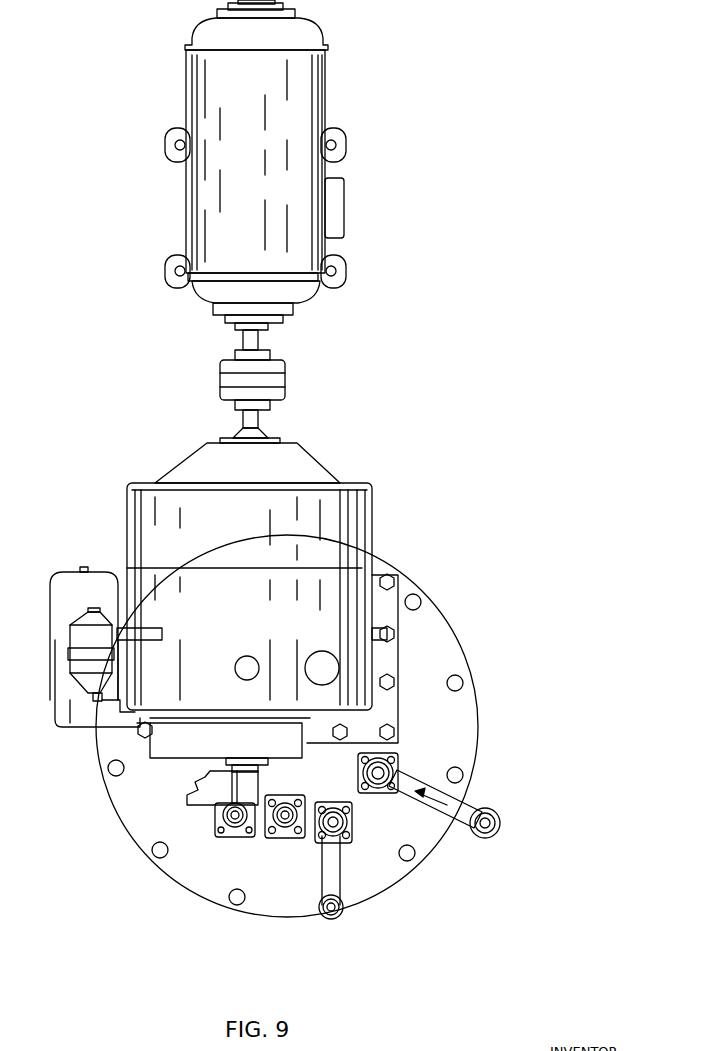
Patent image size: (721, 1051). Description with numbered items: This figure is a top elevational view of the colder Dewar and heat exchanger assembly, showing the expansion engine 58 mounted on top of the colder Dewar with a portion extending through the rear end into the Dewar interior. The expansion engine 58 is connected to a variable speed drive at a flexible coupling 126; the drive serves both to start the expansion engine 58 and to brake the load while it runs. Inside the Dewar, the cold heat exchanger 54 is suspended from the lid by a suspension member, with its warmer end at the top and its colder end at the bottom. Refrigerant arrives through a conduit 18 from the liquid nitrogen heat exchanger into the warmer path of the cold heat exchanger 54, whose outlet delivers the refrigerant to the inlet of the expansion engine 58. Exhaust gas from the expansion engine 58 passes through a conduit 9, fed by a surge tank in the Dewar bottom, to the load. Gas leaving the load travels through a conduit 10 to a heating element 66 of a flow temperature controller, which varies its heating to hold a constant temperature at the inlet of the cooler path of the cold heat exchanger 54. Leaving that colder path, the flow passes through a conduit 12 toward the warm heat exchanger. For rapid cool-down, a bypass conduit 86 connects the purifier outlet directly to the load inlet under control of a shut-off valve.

The flexible coupling 126 is at (286, 388).
The expansion engine 58 is at (374, 528).
The cold heat exchanger 54 is at (466, 652).
The heating element 66 is at (400, 768).
The conduit 10 is at (502, 818).
The conduit 9 is at (350, 832).
The bypass conduit 86 is at (338, 917).
The conduit 12 is at (283, 828).
The conduit 18 is at (215, 818).